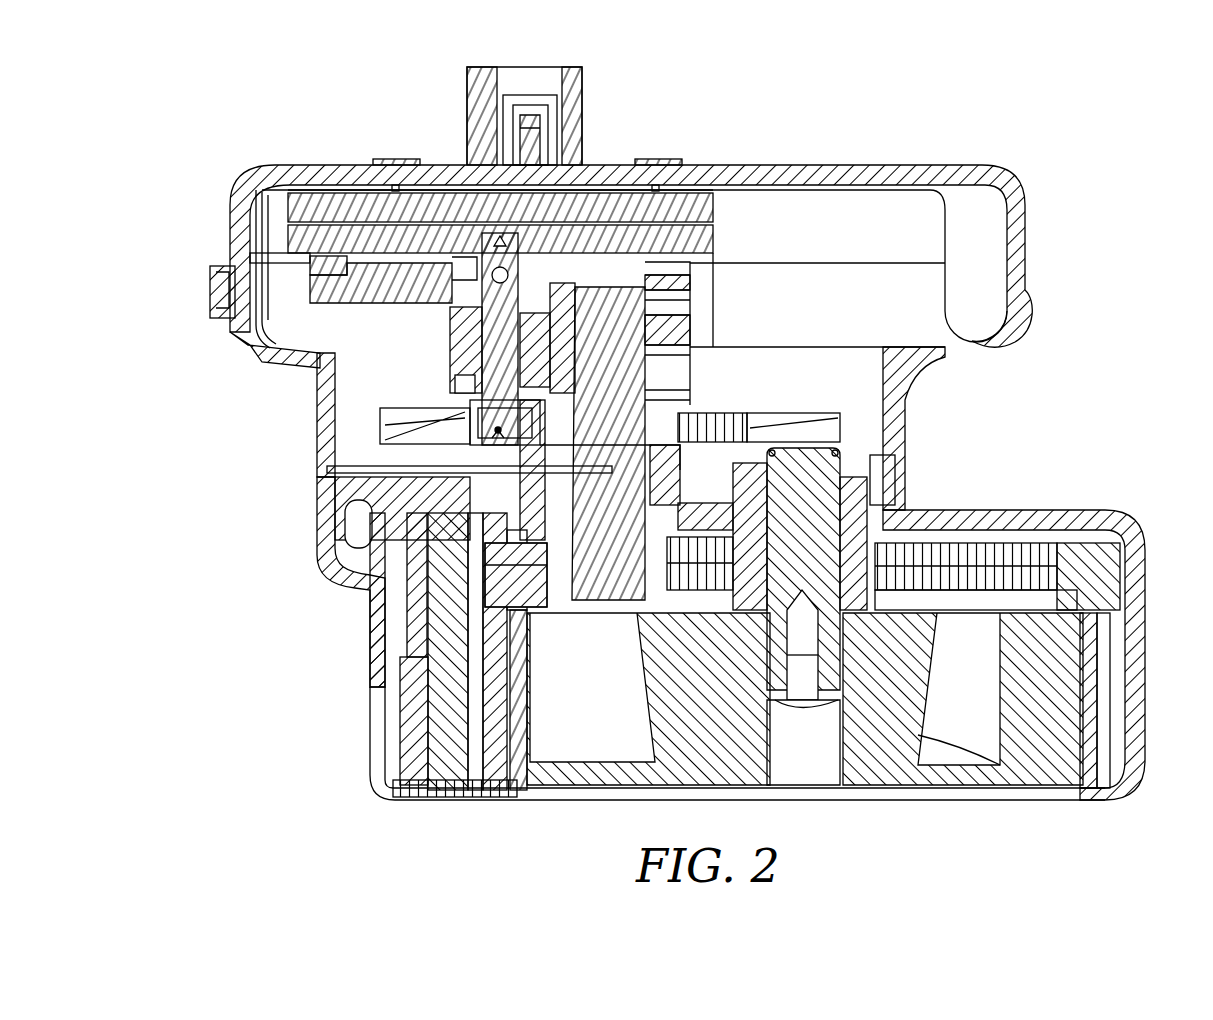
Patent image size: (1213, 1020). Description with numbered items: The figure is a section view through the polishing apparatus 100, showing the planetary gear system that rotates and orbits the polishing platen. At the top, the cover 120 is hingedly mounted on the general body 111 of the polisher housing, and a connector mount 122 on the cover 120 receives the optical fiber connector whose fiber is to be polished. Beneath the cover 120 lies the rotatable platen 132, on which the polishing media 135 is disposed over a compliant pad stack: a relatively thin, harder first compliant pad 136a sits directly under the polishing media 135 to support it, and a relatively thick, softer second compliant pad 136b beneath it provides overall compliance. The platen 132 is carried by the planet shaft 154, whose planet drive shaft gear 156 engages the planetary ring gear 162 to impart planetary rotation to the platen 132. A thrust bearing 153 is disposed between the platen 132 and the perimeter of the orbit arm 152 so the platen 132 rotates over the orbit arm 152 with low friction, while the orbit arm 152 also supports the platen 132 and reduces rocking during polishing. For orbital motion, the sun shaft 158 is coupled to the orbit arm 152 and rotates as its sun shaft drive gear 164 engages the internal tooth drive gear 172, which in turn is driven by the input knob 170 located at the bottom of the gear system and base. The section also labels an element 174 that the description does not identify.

The polishing apparatus 100 is at (1108, 128).
The general body 111 is at (906, 432).
The cover 120 is at (240, 186).
The connector mount 122 is at (586, 94).
The rotatable platen 132 is at (716, 241).
The polishing media 135 is at (326, 191).
The first compliant pad 136a is at (702, 190).
The second compliant pad 136b is at (716, 206).
The orbit arm 152 is at (330, 299).
The thrust bearing 153 is at (330, 266).
The planet shaft 154 is at (494, 373).
The planet drive shaft gear 156 is at (488, 418).
The sun shaft 158 is at (465, 475).
The planetary ring gear 162 is at (730, 412).
The sun shaft drive gear 164 is at (540, 565).
The input knob 170 is at (883, 778).
The internal tooth drive gear 172 is at (996, 592).
The output shaft 174 is at (814, 491).